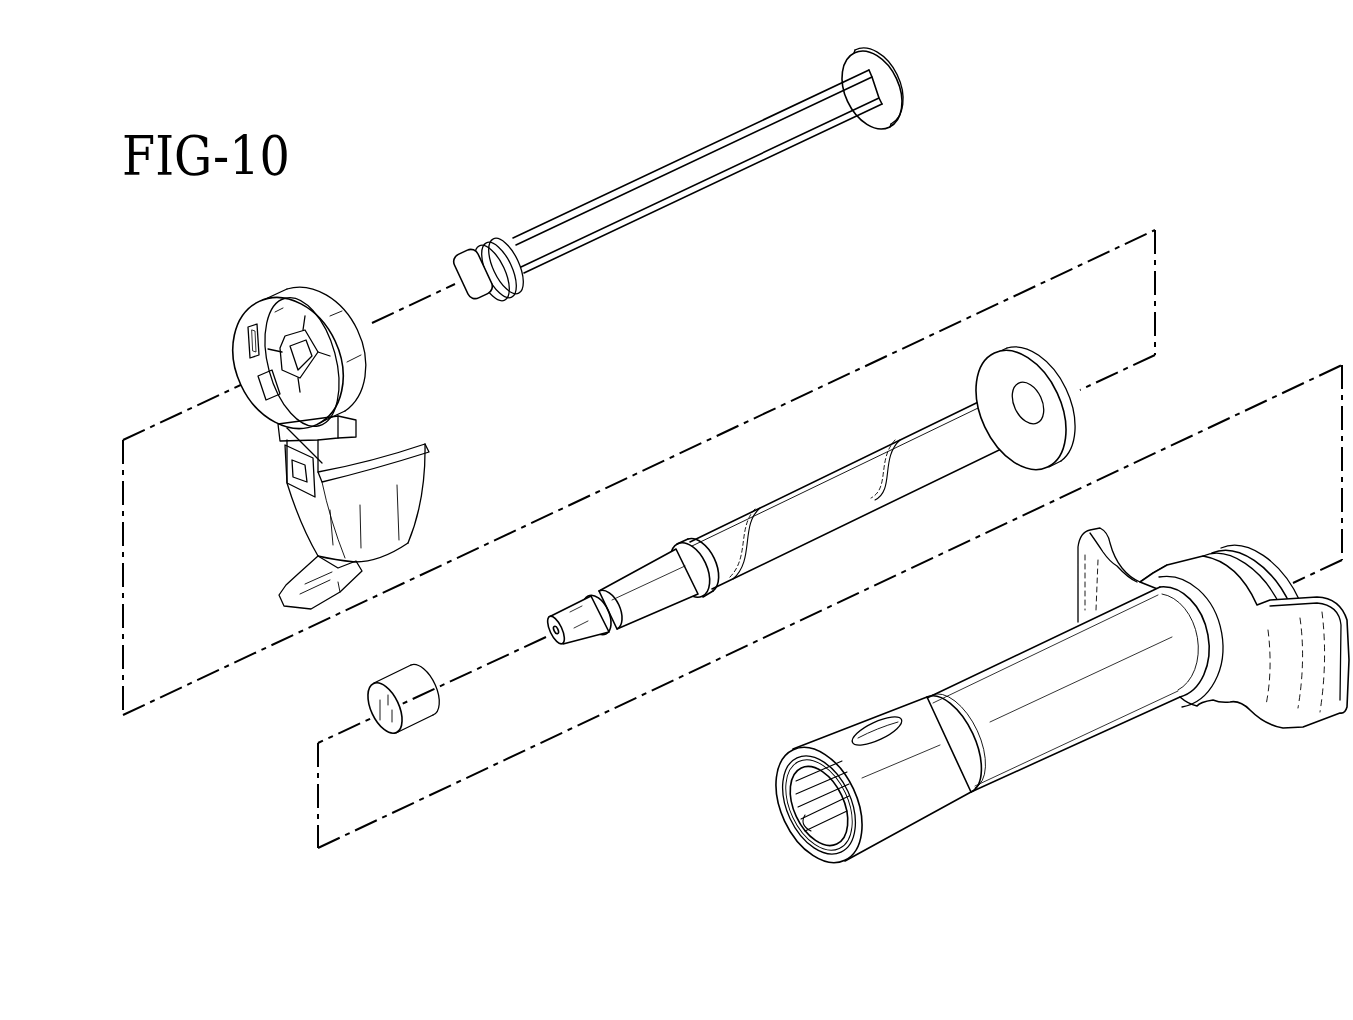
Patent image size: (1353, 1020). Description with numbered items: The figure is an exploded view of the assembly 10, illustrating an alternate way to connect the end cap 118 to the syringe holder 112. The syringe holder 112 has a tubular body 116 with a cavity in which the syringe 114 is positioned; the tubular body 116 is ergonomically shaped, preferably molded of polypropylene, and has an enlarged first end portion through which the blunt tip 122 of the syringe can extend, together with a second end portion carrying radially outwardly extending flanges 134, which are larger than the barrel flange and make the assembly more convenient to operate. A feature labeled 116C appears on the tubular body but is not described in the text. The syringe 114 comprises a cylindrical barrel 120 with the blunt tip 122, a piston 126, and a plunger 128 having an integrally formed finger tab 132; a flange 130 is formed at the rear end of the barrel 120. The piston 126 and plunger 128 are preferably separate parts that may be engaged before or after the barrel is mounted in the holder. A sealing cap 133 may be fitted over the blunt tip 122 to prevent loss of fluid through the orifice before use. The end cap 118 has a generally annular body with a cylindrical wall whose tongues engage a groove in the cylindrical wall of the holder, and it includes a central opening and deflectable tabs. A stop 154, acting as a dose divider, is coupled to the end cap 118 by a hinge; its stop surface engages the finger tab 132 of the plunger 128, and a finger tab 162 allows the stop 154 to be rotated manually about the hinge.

The assembly 10 is at (1002, 245).
The syringe holder 112 is at (1024, 801).
The syringe 114 is at (783, 491).
The tubular body 116 is at (1054, 713).
The internal teeth of handle bore 116C is at (820, 812).
The end cap 118 is at (313, 285).
The syringe barrel 120 is at (833, 472).
The blunt tip 122 is at (568, 607).
The piston 126 is at (492, 240).
The plunger 128 is at (677, 173).
The flange 130 is at (1003, 370).
The finger tab 132 is at (887, 127).
The sealing cap 133 is at (413, 682).
The flanges 134 is at (1086, 577).
The stop 154 is at (313, 512).
The finger tab 162 is at (302, 577).